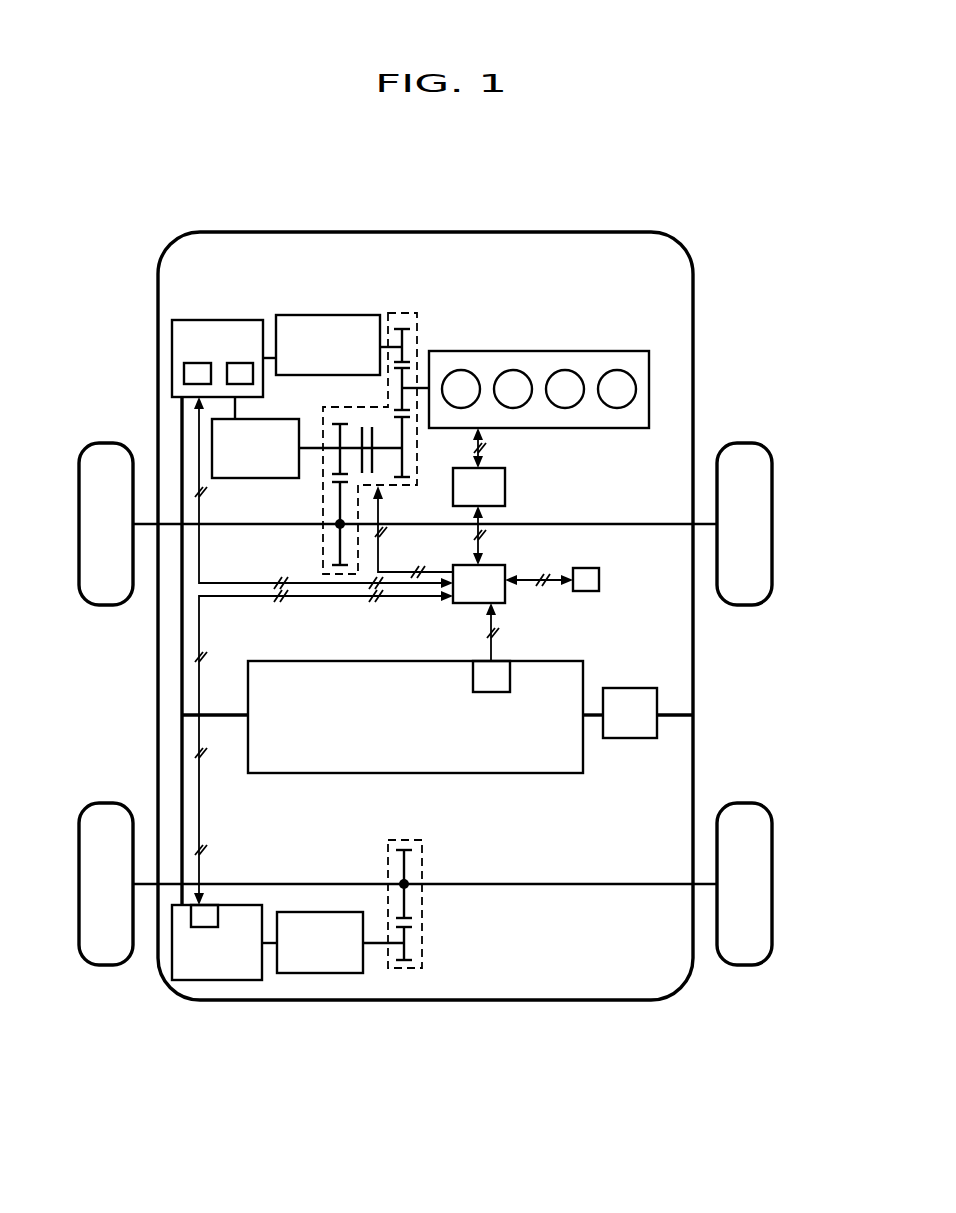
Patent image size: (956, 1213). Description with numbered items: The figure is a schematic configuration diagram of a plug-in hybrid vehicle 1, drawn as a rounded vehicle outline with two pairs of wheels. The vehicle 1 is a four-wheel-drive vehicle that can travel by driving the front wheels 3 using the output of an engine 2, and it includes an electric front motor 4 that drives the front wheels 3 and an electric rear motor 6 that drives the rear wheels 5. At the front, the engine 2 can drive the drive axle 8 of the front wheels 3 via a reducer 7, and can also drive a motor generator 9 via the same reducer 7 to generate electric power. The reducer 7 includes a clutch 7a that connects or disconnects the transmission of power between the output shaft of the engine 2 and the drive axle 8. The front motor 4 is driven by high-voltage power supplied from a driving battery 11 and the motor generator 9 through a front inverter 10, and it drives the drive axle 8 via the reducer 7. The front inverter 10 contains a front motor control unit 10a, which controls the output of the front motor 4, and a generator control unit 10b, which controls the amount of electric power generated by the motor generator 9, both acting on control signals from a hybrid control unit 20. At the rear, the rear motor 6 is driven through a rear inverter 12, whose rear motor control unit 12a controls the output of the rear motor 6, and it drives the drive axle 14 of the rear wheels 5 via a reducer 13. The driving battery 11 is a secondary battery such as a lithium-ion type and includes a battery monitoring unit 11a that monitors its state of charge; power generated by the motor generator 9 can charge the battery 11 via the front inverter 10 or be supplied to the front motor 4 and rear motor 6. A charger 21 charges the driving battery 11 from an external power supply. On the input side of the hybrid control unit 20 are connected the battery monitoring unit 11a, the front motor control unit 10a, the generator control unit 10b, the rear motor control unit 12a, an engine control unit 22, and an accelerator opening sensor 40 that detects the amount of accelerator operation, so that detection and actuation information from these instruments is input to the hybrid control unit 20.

The vehicle 1 is at (742, 238).
The engine 2 is at (580, 351).
The front wheels 3 is at (79, 470).
The front motor 4 is at (253, 478).
The rear wheels 5 is at (79, 870).
The rear motor 6 is at (333, 973).
The reducer 7 is at (382, 414).
The clutch 7a is at (372, 462).
The drive axle 8 is at (655, 526).
The motor generator 9 is at (330, 315).
The front inverter 10 is at (217, 323).
The front motor control unit 10a is at (194, 363).
The generator control unit 10b is at (238, 363).
The driving battery 11 is at (415, 691).
The battery monitoring unit 11a is at (505, 692).
The rear inverter 12 is at (217, 970).
The rear motor control unit 12a is at (206, 927).
The reducer 13 is at (422, 928).
The drive axle 14 is at (618, 886).
The hybrid control unit 20 is at (505, 603).
The charger 21 is at (620, 738).
The engine control unit 22 is at (470, 468).
The accelerator opening sensor 40 is at (577, 567).